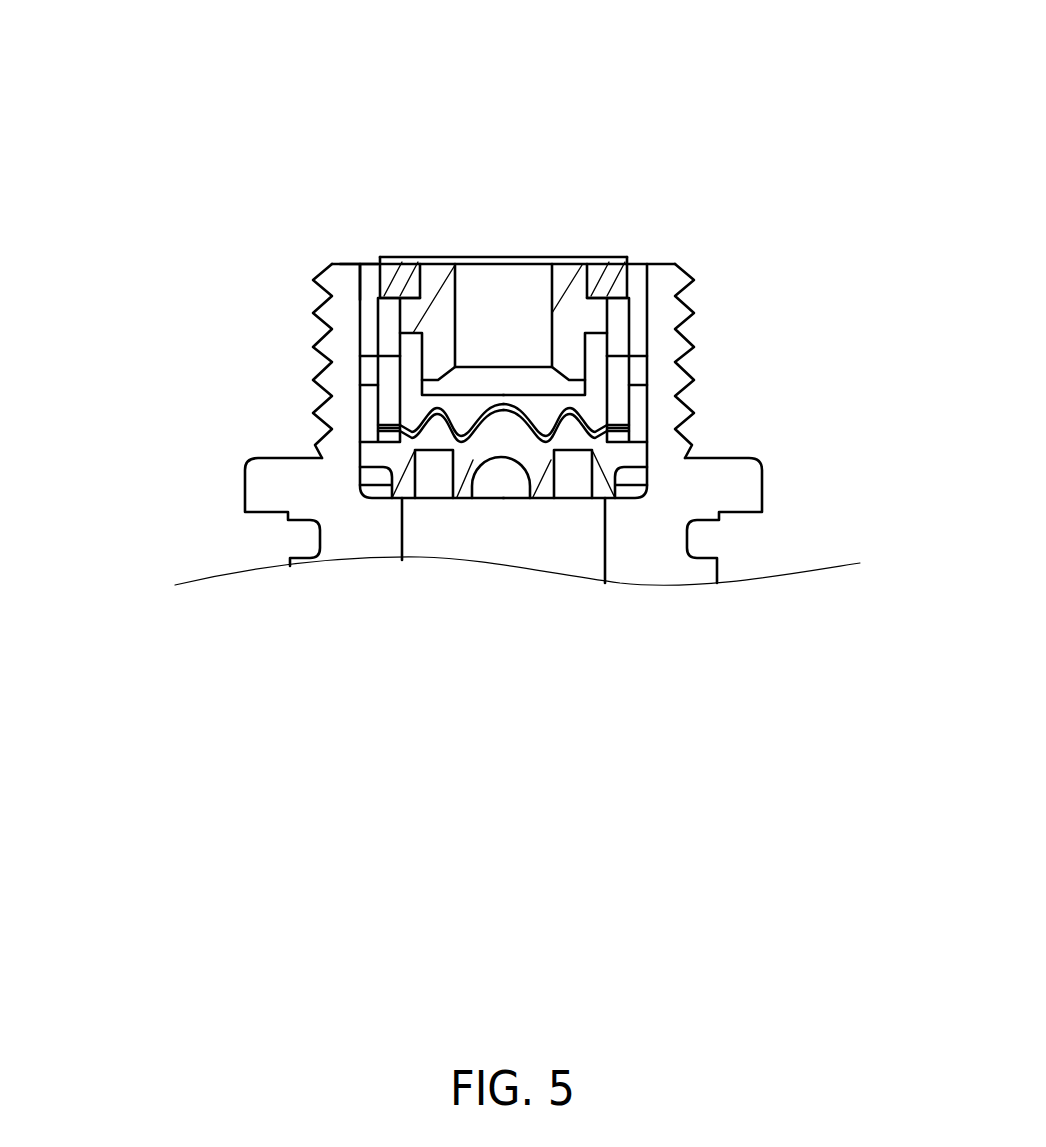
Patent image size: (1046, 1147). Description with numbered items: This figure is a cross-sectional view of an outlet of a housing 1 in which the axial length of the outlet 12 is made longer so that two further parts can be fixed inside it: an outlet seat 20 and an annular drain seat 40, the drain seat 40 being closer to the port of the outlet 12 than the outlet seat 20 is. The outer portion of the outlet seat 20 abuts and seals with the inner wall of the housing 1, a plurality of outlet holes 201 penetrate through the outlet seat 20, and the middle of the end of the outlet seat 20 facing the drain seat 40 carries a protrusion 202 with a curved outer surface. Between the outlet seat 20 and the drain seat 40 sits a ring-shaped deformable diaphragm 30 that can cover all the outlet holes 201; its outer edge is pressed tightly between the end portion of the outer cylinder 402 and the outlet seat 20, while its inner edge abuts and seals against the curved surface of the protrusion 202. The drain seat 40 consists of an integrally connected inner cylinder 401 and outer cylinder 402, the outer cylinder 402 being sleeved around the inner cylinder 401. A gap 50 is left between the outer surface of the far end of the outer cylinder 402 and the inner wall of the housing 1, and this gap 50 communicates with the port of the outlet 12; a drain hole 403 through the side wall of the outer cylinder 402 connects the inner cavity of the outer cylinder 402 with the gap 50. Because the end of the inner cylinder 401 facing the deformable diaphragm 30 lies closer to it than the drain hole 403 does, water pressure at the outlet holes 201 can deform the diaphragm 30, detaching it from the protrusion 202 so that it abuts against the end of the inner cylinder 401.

The housing 1 is at (305, 480).
The outlet 12 is at (322, 225).
The outlet seat 20 is at (633, 606).
The outlet holes 201 is at (433, 478).
The protrusion 202 is at (495, 465).
The deformable diaphragm 30 is at (648, 398).
The drain seat 40 is at (398, 242).
The inner cylinder 401 is at (442, 310).
The outer cylinder 402 is at (387, 400).
The drain hole 403 is at (390, 340).
The gap 50 is at (365, 319).